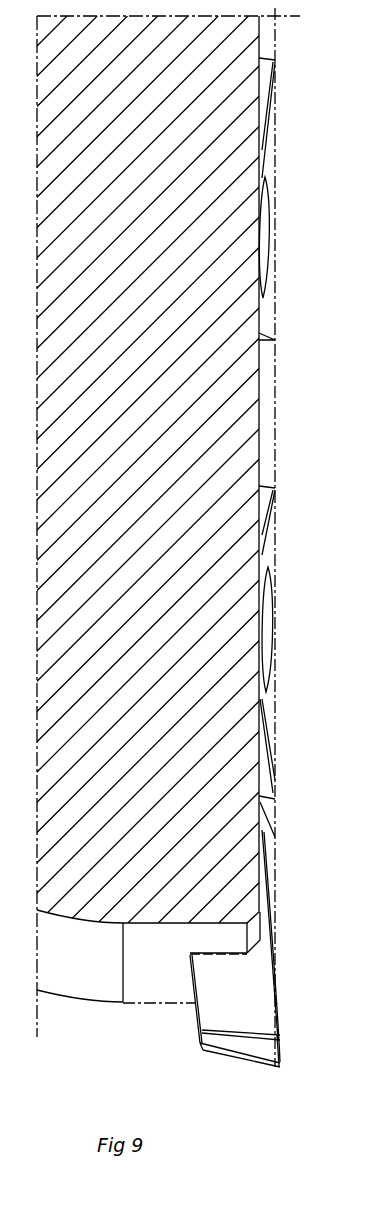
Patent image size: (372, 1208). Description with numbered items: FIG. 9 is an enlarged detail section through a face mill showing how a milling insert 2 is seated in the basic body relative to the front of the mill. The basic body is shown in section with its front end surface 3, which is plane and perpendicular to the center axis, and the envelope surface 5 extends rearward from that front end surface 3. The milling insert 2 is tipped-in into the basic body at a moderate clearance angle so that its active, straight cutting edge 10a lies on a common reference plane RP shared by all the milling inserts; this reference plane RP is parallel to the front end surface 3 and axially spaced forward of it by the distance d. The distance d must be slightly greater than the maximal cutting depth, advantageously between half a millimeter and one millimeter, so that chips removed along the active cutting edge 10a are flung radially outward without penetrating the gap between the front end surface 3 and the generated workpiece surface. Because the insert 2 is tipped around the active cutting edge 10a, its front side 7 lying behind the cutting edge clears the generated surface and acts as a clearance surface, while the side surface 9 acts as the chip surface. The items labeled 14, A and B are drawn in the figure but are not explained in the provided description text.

The milling insert 2 is at (288, 274).
The front end surface 3 is at (261, 410).
The front side 7 is at (272, 160).
The active cutting edge 10a is at (276, 230).
The groove 14 is at (265, 617).
The axial distance d is at (250, 359).
The reference plane RP is at (275, 445).
The envelope surface 5 is at (164, 979).
The side surface 9 is at (238, 1004).
The cutting edge A is at (252, 998).
The support face B is at (235, 1048).